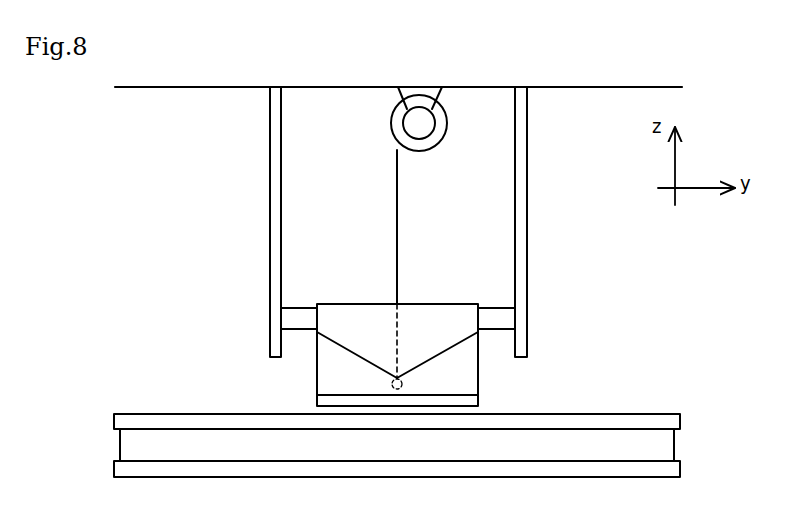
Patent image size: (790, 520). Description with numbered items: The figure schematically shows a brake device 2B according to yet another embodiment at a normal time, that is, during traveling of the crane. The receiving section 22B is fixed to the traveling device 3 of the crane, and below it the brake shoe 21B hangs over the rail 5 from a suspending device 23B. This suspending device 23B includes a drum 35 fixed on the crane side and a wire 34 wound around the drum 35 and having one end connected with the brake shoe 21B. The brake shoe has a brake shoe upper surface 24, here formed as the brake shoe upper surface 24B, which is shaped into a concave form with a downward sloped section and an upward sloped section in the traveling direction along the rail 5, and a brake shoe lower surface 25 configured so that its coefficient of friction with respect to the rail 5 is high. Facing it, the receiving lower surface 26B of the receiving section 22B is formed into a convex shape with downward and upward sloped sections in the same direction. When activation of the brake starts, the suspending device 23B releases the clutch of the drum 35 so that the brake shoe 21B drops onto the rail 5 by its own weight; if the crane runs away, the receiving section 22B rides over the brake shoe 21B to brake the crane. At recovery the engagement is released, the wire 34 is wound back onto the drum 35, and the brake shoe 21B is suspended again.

The brake device 2B is at (102, 137).
The traveling device 3 is at (218, 88).
The rail 5 is at (153, 425).
The brake shoe 21B is at (473, 386).
The receiving section 22B is at (390, 355).
The suspending device 23B is at (372, 174).
The brake shoe upper surface 24 is at (277, 301).
The brake shoe upper surface 24B is at (366, 364).
The brake shoe lower surface 25 is at (407, 407).
The receiving lower surface 26B is at (456, 335).
The wire 34 is at (399, 186).
The drum 35 is at (440, 128).